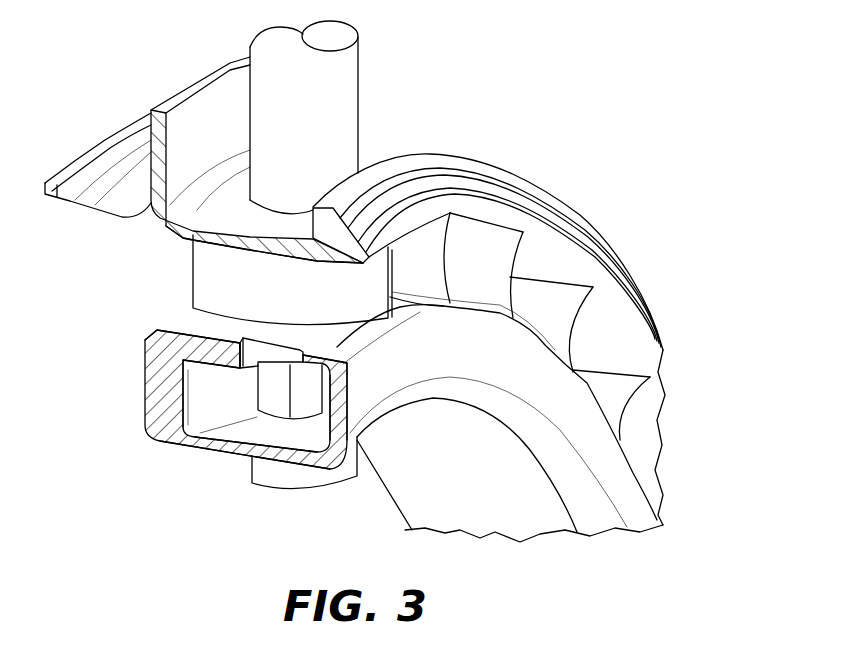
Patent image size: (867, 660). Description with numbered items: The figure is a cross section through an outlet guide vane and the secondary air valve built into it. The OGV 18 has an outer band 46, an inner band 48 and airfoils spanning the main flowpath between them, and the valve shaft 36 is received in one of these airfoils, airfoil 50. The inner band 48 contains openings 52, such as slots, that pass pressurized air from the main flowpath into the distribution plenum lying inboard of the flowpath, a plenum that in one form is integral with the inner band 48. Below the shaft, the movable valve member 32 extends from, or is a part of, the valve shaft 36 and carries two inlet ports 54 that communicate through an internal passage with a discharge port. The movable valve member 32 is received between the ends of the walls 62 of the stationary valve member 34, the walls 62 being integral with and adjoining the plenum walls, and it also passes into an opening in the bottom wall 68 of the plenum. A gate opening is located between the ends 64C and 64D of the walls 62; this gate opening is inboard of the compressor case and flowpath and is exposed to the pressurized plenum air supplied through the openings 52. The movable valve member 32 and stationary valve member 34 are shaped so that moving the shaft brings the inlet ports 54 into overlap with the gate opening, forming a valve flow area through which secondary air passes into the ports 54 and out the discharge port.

The OGV 18 is at (489, 301).
The valve shaft 36 is at (360, 62).
The outer band 46 is at (173, 240).
The airfoil 50 is at (187, 253).
The openings 52 is at (265, 345).
The inner band 48 is at (340, 344).
The stationary valve member 34 is at (230, 425).
The walls 62 is at (249, 388).
The end 64C is at (253, 383).
The end 64D is at (328, 390).
The bottom wall 68 is at (207, 435).
The inlet ports 54 is at (277, 398).
The movable valve member 32 is at (307, 397).